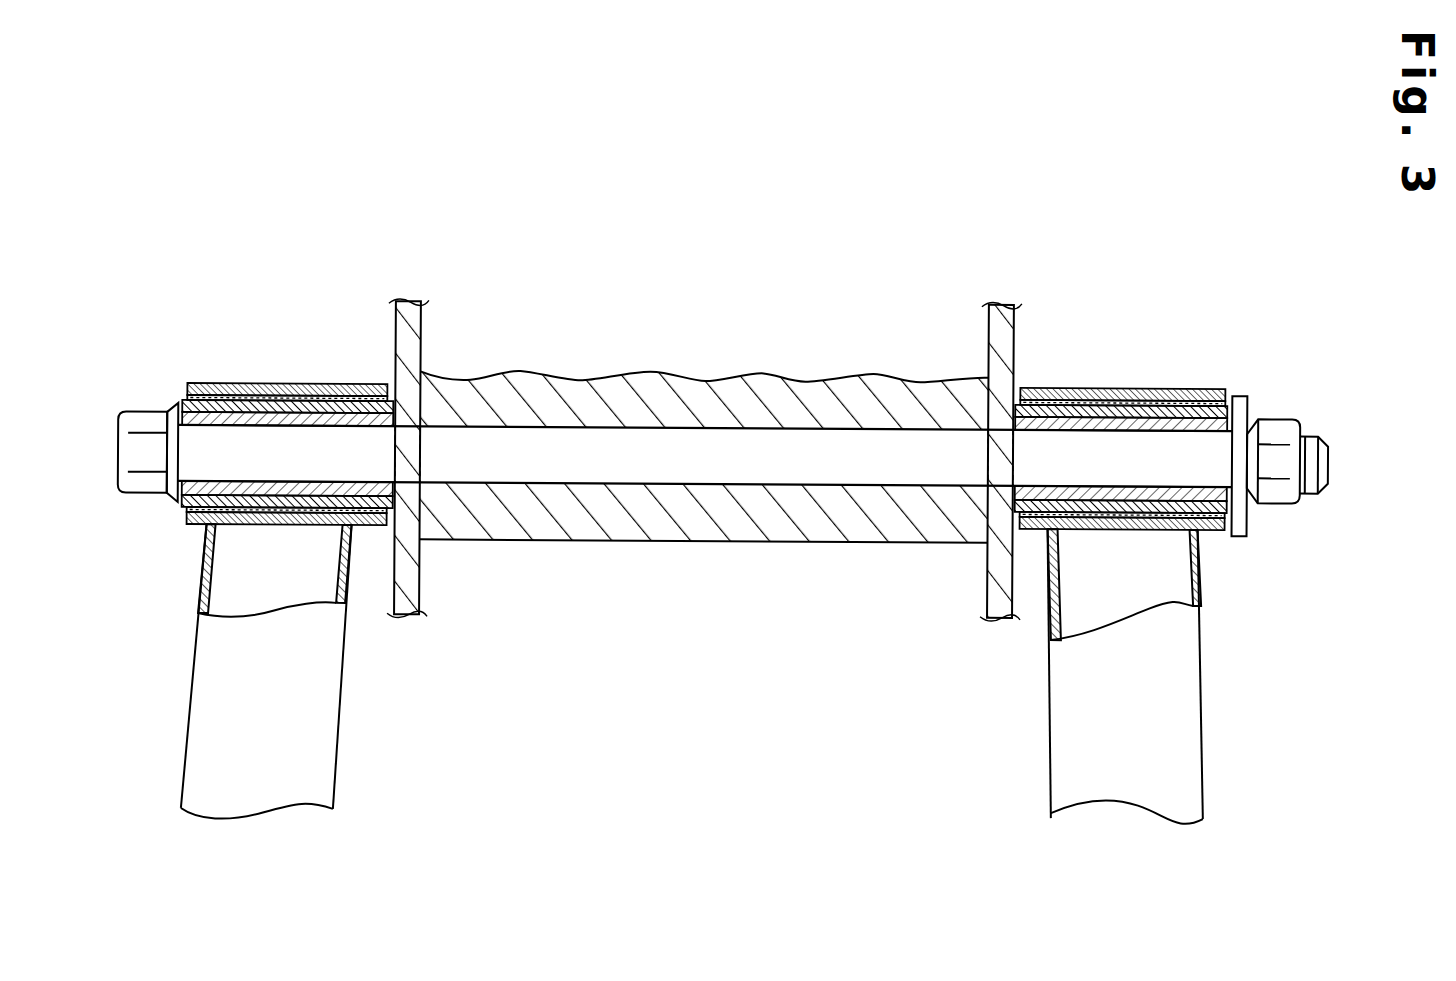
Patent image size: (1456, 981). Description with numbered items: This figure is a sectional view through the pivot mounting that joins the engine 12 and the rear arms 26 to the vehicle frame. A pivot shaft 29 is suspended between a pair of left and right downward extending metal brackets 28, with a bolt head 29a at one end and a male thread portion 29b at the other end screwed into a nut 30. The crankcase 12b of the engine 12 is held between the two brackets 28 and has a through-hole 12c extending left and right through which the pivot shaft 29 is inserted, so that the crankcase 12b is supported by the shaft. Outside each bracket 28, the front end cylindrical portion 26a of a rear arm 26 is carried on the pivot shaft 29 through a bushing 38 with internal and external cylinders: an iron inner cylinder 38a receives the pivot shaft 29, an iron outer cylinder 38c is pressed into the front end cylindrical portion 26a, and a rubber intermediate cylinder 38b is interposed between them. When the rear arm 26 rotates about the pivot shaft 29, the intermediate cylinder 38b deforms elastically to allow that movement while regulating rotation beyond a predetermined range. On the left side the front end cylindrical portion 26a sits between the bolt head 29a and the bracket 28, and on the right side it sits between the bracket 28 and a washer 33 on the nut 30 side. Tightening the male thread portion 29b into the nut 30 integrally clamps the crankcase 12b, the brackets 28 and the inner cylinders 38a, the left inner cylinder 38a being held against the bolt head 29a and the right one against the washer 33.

The engine 12 is at (705, 407).
The crankcase 12b is at (560, 388).
The through-hole 12c is at (841, 440).
The rear arm 26 is at (328, 683).
The front end cylindrical portion 26a is at (365, 383).
The bracket 28 is at (405, 310).
The pivot shaft 29 is at (724, 472).
The bolt head 29a is at (140, 493).
The male thread portion 29b is at (1305, 492).
The nut 30 is at (1282, 403).
The washer 33 is at (1235, 533).
The bushing with internal and external cylinders 38 is at (325, 237).
The inner cylinder 38a is at (320, 383).
The intermediate cylinder 38b is at (268, 383).
The outer cylinder 38c is at (206, 383).